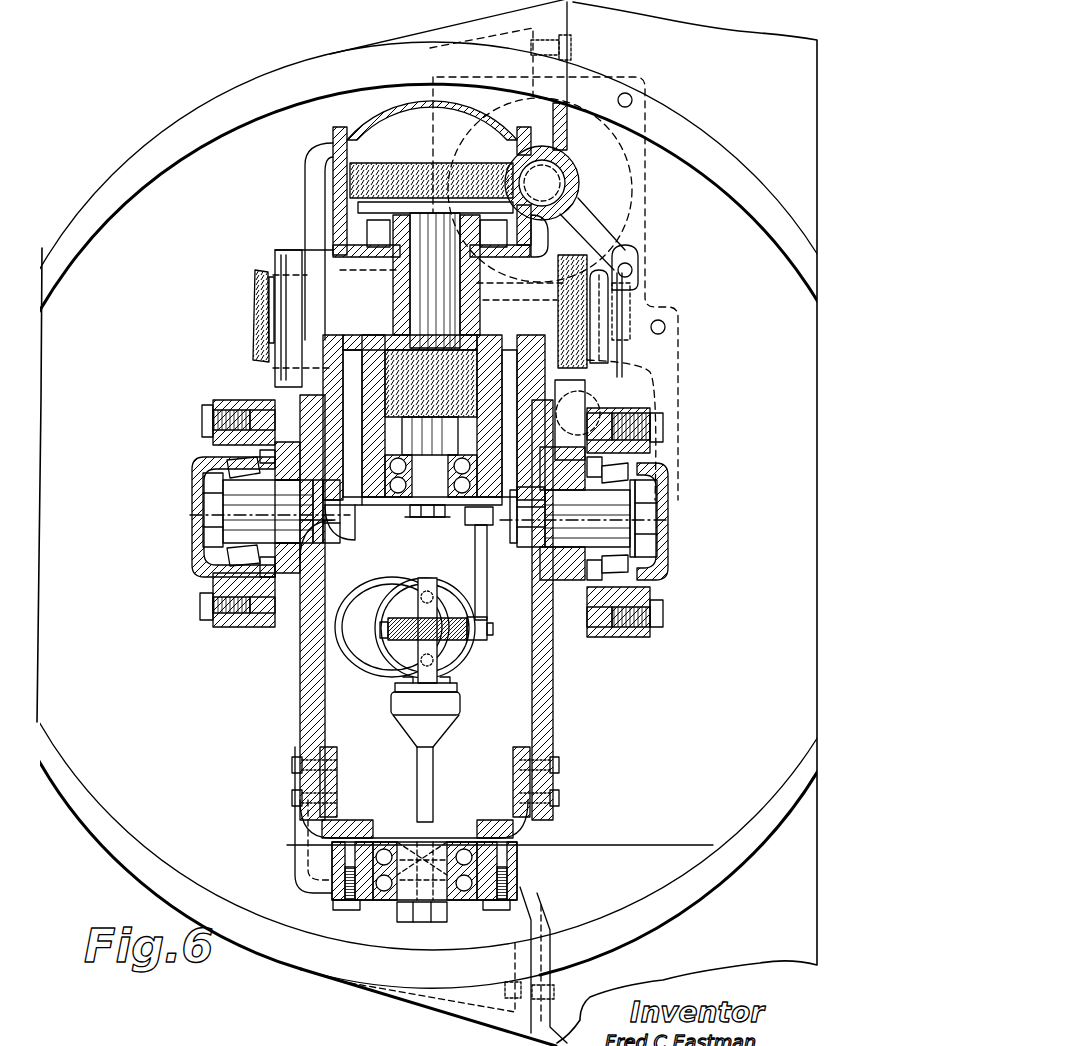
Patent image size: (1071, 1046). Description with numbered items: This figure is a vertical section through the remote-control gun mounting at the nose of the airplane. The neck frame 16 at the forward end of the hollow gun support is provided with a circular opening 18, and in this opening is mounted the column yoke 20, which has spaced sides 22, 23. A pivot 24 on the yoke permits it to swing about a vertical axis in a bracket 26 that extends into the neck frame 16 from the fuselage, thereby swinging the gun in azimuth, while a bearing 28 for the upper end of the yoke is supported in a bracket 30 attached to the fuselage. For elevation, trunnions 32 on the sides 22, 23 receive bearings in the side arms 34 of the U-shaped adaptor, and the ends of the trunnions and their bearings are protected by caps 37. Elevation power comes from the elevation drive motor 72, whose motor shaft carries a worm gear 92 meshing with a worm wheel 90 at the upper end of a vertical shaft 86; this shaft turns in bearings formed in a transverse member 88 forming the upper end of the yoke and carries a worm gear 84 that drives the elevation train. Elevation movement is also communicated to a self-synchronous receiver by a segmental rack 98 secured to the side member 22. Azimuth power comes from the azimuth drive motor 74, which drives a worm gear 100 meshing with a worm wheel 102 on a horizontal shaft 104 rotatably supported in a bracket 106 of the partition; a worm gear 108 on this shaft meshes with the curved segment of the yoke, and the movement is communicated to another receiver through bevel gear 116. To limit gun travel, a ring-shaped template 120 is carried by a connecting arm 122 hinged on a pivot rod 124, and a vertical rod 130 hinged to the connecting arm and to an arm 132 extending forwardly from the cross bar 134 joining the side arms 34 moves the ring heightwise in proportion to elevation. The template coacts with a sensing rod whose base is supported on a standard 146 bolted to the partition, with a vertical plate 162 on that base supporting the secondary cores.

The neck frame 16 is at (470, 30).
The circular opening 18 is at (143, 840).
The column yoke 20 is at (566, 733).
The side of column yoke 22 is at (300, 670).
The side of column yoke 23 is at (553, 693).
The pivot 24 is at (410, 887).
The bracket 26 is at (577, 850).
The bearing 28 is at (370, 233).
The bracket 30 is at (532, 236).
The trunnions 32 is at (227, 533).
The side arms 34 is at (225, 620).
The caps 37 is at (192, 512).
The elevation drive motor 72 is at (628, 153).
The azimuth drive motor 74 is at (657, 362).
The worm gear 84 is at (392, 348).
The vertical shaft 86 is at (406, 296).
The transverse member 88 is at (500, 345).
The worm wheel 90 is at (397, 163).
The worm gear 92 is at (556, 172).
The segmental rack 98 is at (286, 442).
The worm gear 100 is at (598, 400).
The worm wheel 102 is at (567, 250).
The horizontal shaft 104 is at (347, 290).
The bracket 106 is at (610, 301).
The worm gear 108 is at (370, 270).
The bevel gear 116 is at (253, 310).
The ring-shaped template 120 is at (372, 666).
The connecting arm 122 is at (388, 618).
The pivot rod 124 is at (452, 640).
The vertical rod 130 is at (488, 597).
The arm 132 is at (503, 517).
The cross bar 134 is at (367, 523).
The standard 146 is at (433, 785).
The vertical plate 162 is at (450, 596).